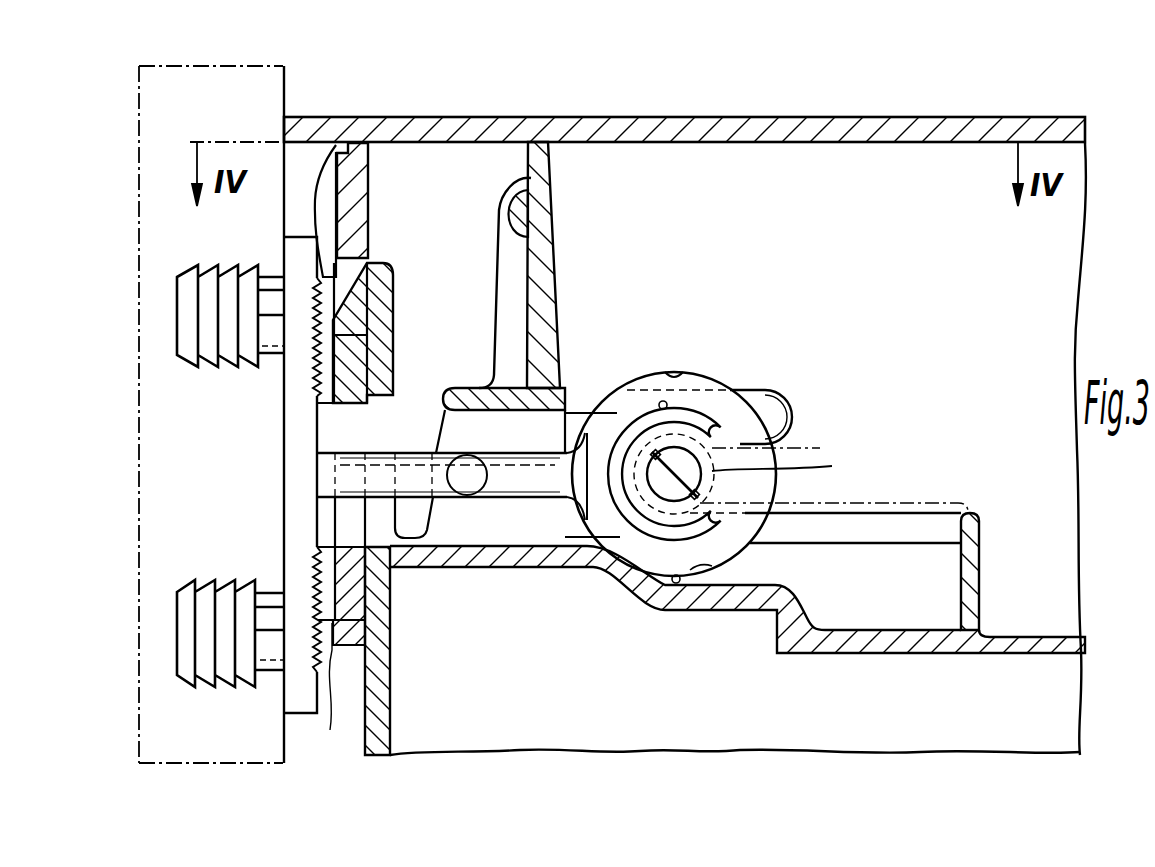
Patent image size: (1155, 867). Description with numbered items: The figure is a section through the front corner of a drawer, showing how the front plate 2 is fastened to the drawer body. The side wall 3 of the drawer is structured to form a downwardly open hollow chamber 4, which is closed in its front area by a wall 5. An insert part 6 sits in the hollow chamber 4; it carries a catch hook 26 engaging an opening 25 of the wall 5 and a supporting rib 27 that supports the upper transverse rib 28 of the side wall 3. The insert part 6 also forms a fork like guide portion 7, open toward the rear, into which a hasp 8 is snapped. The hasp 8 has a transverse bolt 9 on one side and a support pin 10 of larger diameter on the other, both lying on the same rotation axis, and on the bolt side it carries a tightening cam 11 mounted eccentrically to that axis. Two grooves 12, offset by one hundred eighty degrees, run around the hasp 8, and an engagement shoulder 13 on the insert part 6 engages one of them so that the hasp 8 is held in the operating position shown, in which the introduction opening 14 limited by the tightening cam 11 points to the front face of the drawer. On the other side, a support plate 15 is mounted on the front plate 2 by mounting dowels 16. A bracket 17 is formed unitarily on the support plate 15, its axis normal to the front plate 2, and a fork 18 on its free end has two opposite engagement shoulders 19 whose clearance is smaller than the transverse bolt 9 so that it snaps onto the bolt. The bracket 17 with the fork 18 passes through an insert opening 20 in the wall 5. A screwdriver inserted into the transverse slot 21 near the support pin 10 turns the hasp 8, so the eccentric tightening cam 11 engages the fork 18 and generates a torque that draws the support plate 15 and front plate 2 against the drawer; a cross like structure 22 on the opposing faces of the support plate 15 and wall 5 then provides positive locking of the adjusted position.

The front plate 2 is at (283, 66).
The side wall 3 is at (903, 116).
The hollow chamber 4 is at (707, 197).
The wall 5 is at (370, 198).
The insert part 6 is at (548, 572).
The fork like guide portion 7 is at (787, 383).
The hasp 8 is at (718, 377).
The transverse bolt 9 is at (670, 483).
The support pin 10 is at (755, 488).
The tightening cam 11 is at (661, 400).
The groove 12 is at (678, 368).
The engagement shoulder 13 is at (680, 585).
The introduction opening 14 is at (812, 490).
The support plate 15 is at (292, 704).
The mounting dowel 16 is at (218, 370).
The bracket 17 is at (523, 478).
The fork 18 is at (640, 443).
The engagement shoulder 19 is at (798, 434).
The insert opening 20 is at (348, 522).
The transverse slot 21 is at (660, 498).
The cross like structure 22 is at (350, 138).
The opening 25 is at (333, 298).
The catch hook 26 is at (350, 327).
The supporting rib 27 is at (552, 165).
The upper transverse rib 28 is at (505, 127).